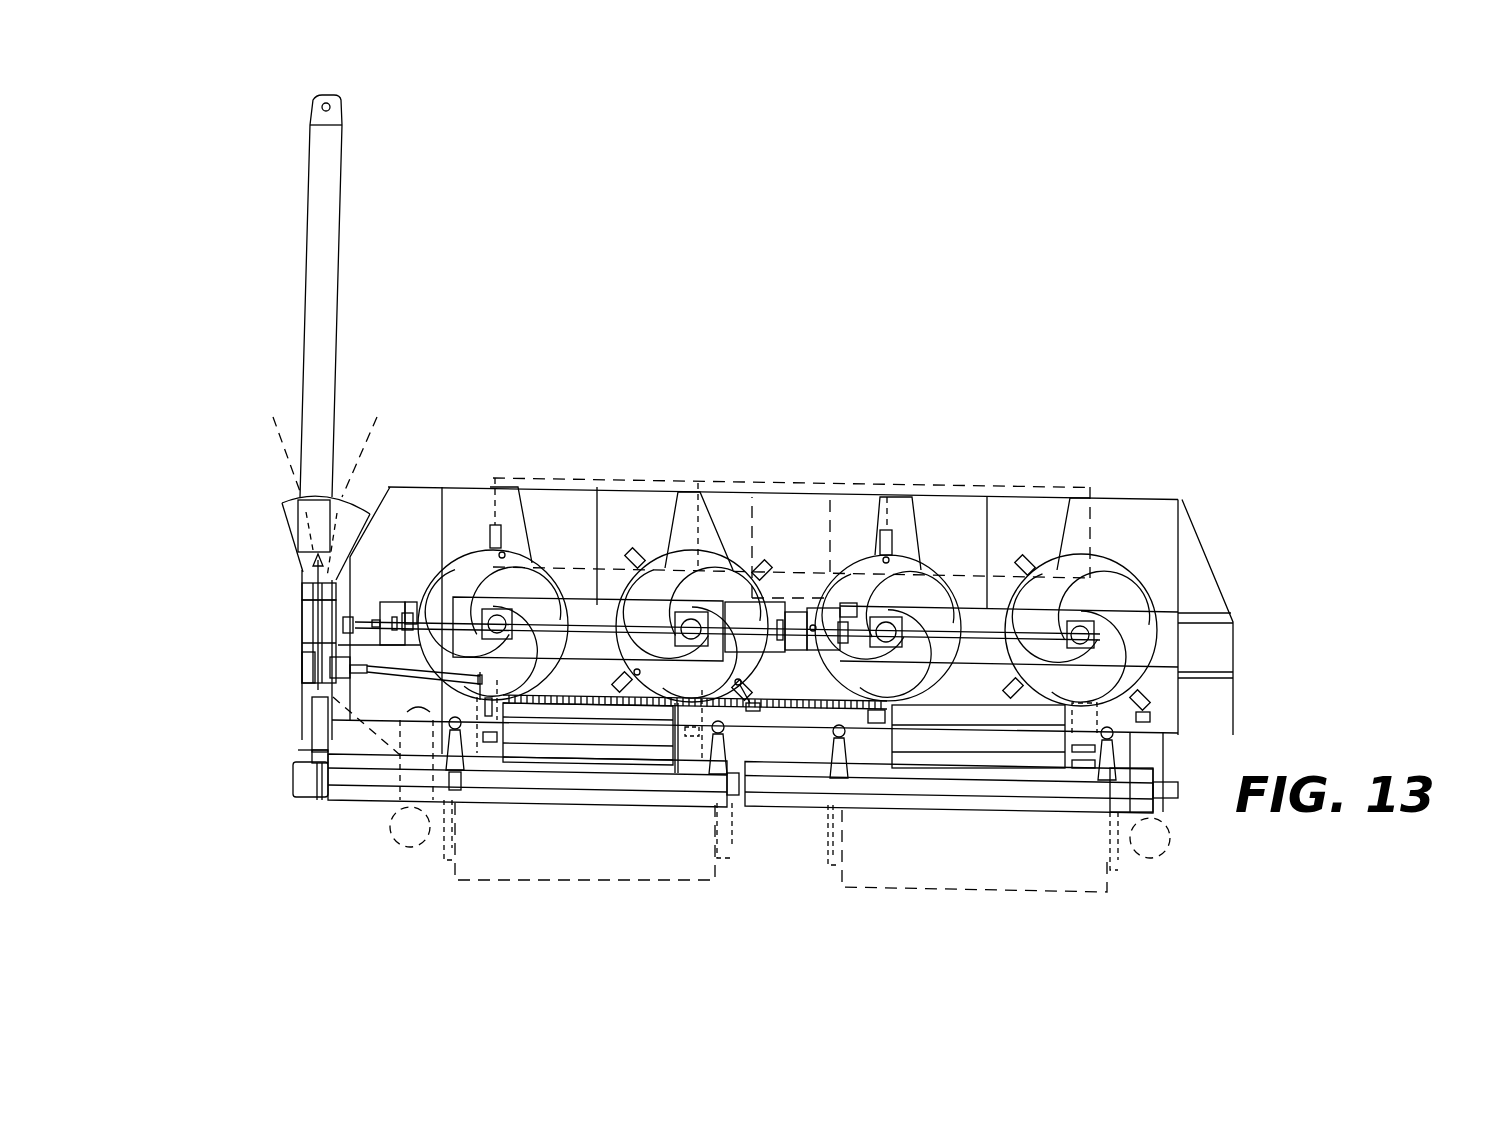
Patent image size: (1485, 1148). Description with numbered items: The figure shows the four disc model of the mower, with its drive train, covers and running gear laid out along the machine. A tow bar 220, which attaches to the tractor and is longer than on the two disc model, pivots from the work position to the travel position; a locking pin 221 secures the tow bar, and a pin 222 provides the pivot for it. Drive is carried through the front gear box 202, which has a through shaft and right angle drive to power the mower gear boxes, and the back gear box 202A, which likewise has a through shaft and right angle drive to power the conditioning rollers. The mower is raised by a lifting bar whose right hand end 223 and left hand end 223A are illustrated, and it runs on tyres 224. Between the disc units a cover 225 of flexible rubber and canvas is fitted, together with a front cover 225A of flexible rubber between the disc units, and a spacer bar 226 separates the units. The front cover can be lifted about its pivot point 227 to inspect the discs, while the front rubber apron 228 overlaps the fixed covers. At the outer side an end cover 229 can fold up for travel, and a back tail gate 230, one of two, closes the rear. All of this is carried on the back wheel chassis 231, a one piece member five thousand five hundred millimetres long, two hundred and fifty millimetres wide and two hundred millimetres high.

The tow bar 220 is at (330, 248).
The locking pin 221 is at (302, 528).
The pin 222 is at (300, 568).
The front gear box 202 is at (307, 617).
The back gear box 202A is at (307, 672).
The lifting bar right hand end 223 is at (788, 785).
The lifting bar left hand end 223A is at (367, 778).
The tyres 224 is at (392, 838).
The cover between the disc units 225 is at (752, 691).
The front cover between the disc units 225A is at (824, 541).
The spacer bar 226 is at (725, 497).
The pivot point of front cover 227 is at (583, 572).
The front rubber apron 228 is at (588, 481).
The end cover 229 is at (1197, 572).
The back tail gate 230 is at (610, 860).
The back wheel chassis 231 is at (753, 802).